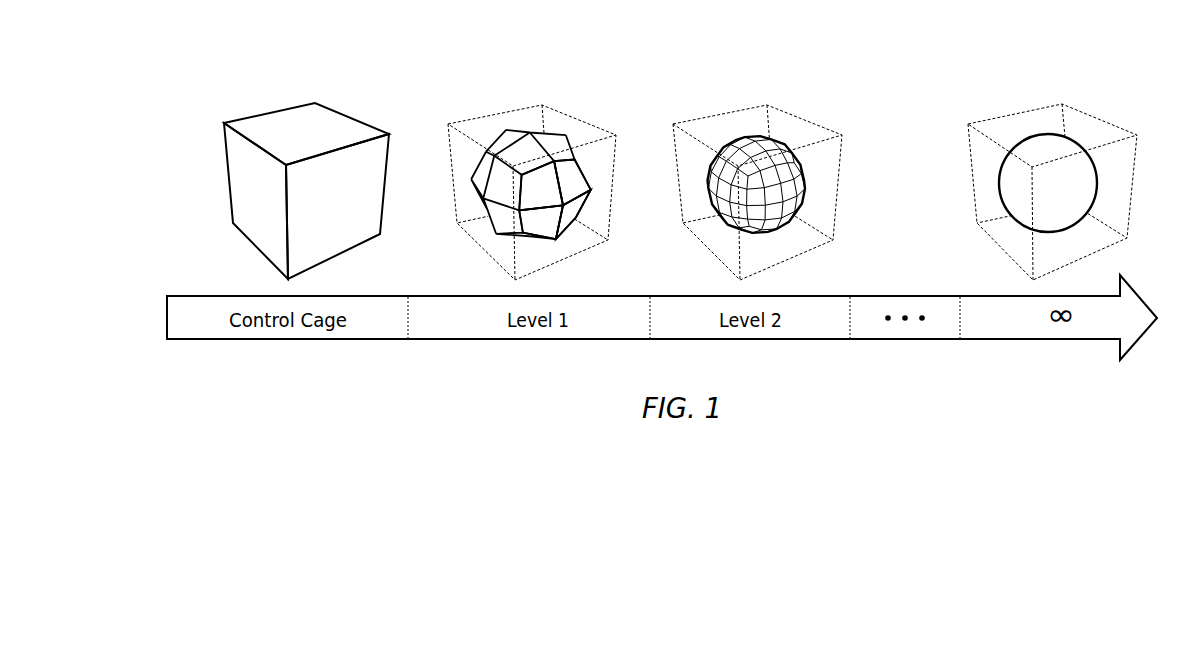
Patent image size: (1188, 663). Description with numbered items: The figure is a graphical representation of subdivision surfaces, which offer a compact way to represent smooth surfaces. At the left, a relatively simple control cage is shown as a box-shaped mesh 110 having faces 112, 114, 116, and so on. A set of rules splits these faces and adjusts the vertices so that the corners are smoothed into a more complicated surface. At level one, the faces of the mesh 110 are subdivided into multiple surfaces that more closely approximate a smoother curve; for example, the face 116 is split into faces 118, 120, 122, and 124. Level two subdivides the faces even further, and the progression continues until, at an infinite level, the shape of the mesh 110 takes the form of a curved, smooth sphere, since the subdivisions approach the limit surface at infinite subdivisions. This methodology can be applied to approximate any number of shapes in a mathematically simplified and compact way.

The mesh 110 is at (374, 78).
The face 112 is at (272, 126).
The face 114 is at (247, 185).
The face 116 is at (330, 243).
The face 118 is at (540, 188).
The face 120 is at (525, 223).
The face 122 is at (570, 178).
The face 124 is at (568, 210).